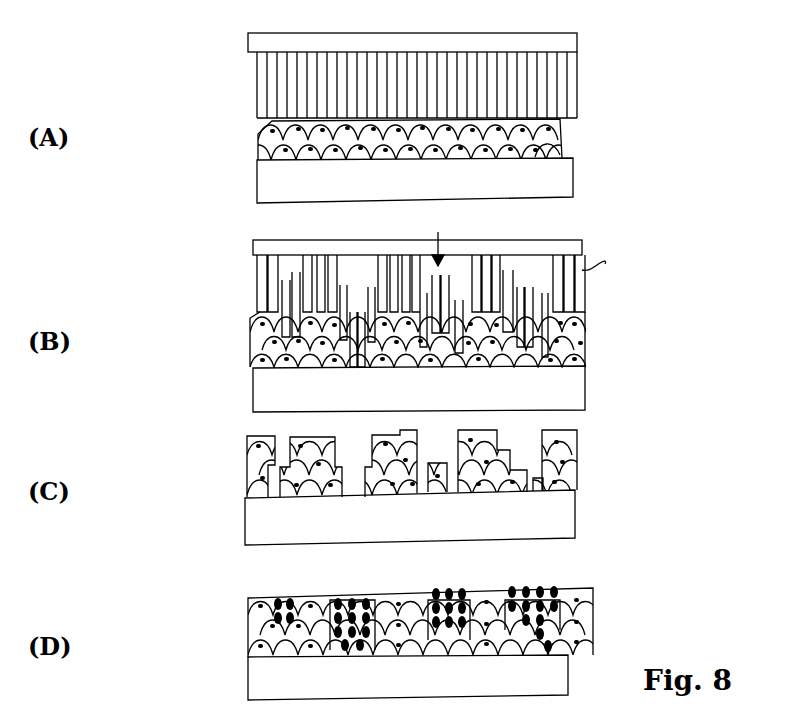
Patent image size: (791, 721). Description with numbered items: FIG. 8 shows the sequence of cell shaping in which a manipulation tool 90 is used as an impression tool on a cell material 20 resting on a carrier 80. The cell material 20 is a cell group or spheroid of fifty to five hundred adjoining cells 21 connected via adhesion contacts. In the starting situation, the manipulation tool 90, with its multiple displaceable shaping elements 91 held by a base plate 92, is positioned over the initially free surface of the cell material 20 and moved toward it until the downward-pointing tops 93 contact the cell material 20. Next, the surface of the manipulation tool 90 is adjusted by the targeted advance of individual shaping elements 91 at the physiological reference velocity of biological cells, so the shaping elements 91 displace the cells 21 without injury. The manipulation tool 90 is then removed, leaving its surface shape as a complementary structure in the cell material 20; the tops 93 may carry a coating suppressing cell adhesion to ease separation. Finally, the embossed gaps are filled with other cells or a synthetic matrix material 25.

The cell material 20 is at (238, 138).
The cells 21 is at (562, 147).
The synthetic matrix material 25 is at (563, 594).
The carrier 80 is at (552, 178).
The manipulation tool 90 is at (238, 72).
The shaping elements 91 is at (414, 59).
The stamp base plate 92 is at (262, 44).
The tops 93 is at (570, 88).